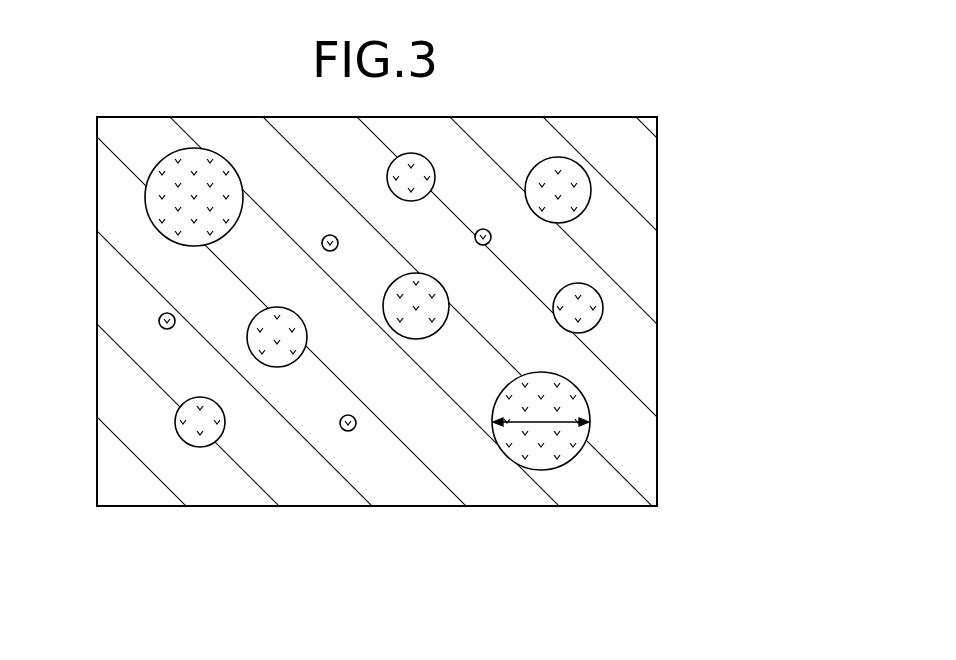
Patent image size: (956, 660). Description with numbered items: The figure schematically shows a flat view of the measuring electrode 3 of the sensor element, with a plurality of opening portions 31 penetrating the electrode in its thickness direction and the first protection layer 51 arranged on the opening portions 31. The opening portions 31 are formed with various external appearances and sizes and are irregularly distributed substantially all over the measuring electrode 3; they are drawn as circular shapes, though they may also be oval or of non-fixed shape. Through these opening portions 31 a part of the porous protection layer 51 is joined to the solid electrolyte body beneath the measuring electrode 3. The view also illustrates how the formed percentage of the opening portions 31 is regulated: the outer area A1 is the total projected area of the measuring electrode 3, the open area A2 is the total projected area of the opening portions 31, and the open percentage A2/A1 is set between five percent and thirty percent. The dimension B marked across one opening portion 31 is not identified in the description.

The measuring electrode 3 is at (618, 360).
The opening portions 31 is at (552, 469).
The first protection layer 51 is at (194, 209).
The particle diameter B is at (543, 422).
The outer area A1 is at (399, 508).
The open area A2 is at (203, 434).